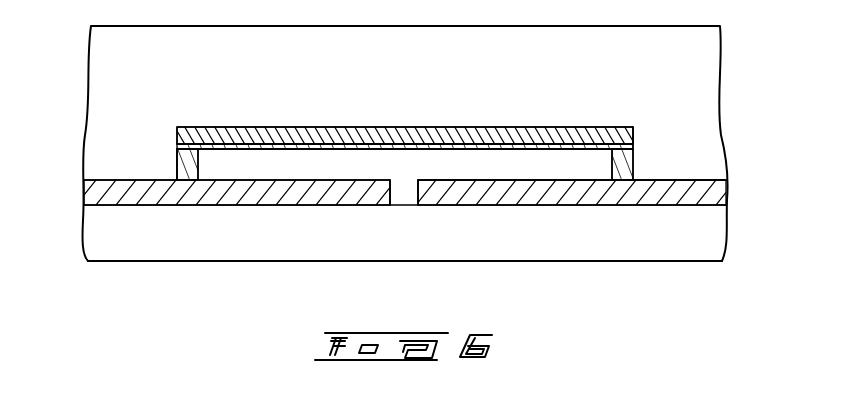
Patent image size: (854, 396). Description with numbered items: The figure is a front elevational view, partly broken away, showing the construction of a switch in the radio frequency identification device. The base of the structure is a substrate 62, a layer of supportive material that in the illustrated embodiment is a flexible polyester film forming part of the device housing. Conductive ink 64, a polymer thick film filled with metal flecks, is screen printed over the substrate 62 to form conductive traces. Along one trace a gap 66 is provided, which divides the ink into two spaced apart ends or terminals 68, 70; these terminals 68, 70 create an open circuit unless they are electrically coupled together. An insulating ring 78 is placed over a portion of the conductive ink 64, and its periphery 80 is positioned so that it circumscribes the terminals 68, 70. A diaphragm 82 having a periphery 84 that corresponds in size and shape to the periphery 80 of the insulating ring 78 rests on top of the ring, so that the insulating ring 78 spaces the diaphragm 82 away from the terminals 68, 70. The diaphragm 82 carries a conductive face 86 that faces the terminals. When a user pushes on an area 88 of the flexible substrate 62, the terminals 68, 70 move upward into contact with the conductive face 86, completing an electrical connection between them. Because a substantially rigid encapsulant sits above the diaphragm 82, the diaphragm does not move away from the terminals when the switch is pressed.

The substrate 62 is at (690, 232).
The conductive ink 64 is at (95, 193).
The gap 66 is at (404, 178).
The terminal 68 is at (367, 178).
The terminal 70 is at (519, 178).
The insulating ring 78 is at (176, 172).
The periphery 80 is at (176, 176).
The diaphragm 82 is at (261, 117).
The periphery 84 is at (635, 133).
The conductive face 86 is at (325, 149).
The area 88 is at (407, 262).